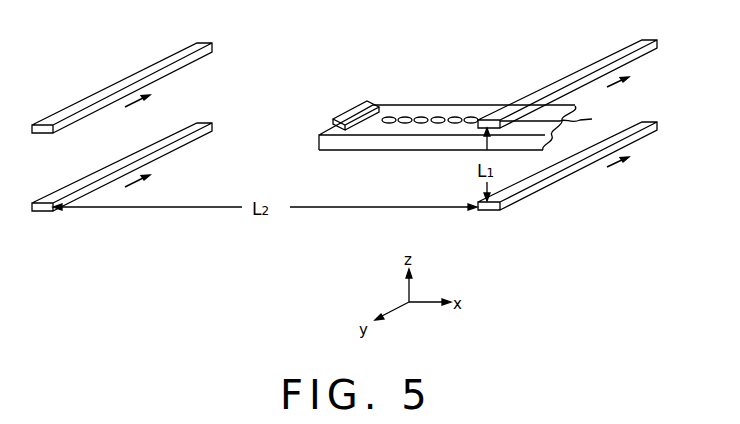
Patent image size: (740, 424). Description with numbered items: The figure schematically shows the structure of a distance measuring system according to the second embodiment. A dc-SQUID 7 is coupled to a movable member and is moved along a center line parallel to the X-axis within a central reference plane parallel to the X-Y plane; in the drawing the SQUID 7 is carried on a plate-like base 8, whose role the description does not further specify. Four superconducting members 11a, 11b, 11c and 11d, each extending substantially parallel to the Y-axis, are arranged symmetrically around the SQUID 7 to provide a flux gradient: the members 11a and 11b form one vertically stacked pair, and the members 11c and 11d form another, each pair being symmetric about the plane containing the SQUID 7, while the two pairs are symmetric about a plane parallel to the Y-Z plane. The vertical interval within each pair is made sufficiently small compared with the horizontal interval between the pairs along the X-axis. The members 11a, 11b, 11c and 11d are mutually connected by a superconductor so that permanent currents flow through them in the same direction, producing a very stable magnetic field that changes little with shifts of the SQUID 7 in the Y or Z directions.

The superconducting member 11a is at (213, 43).
The superconducting member 11b is at (213, 124).
The superconducting member 11c is at (657, 40).
The superconducting member 11d is at (657, 122).
The dc-SQUID 7 is at (347, 112).
The substrate 8 is at (380, 150).